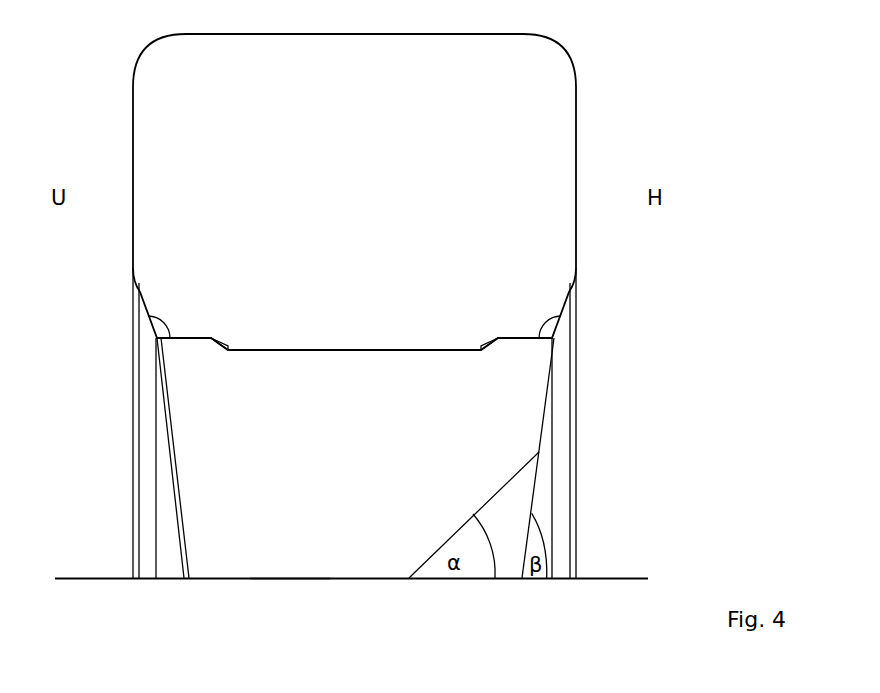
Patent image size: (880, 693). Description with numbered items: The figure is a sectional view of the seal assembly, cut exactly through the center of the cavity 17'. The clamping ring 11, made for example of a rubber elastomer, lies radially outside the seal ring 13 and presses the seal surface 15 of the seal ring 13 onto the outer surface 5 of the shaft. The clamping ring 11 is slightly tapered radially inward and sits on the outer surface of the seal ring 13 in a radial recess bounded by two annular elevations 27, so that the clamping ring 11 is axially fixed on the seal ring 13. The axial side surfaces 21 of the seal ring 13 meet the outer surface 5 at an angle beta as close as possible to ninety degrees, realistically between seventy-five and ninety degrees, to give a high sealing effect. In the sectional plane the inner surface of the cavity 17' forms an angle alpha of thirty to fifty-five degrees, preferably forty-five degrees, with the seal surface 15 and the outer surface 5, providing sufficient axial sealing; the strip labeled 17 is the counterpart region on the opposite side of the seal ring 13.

The clamping ring 11 is at (145, 107).
The seal ring 13 is at (175, 357).
The annular elevations 27 is at (148, 316).
The support strip 17 is at (135, 423).
The cavity 17' is at (576, 423).
The axial side surfaces 21 is at (547, 437).
The outer surface 5 is at (77, 578).
The seal surface 15 is at (285, 579).